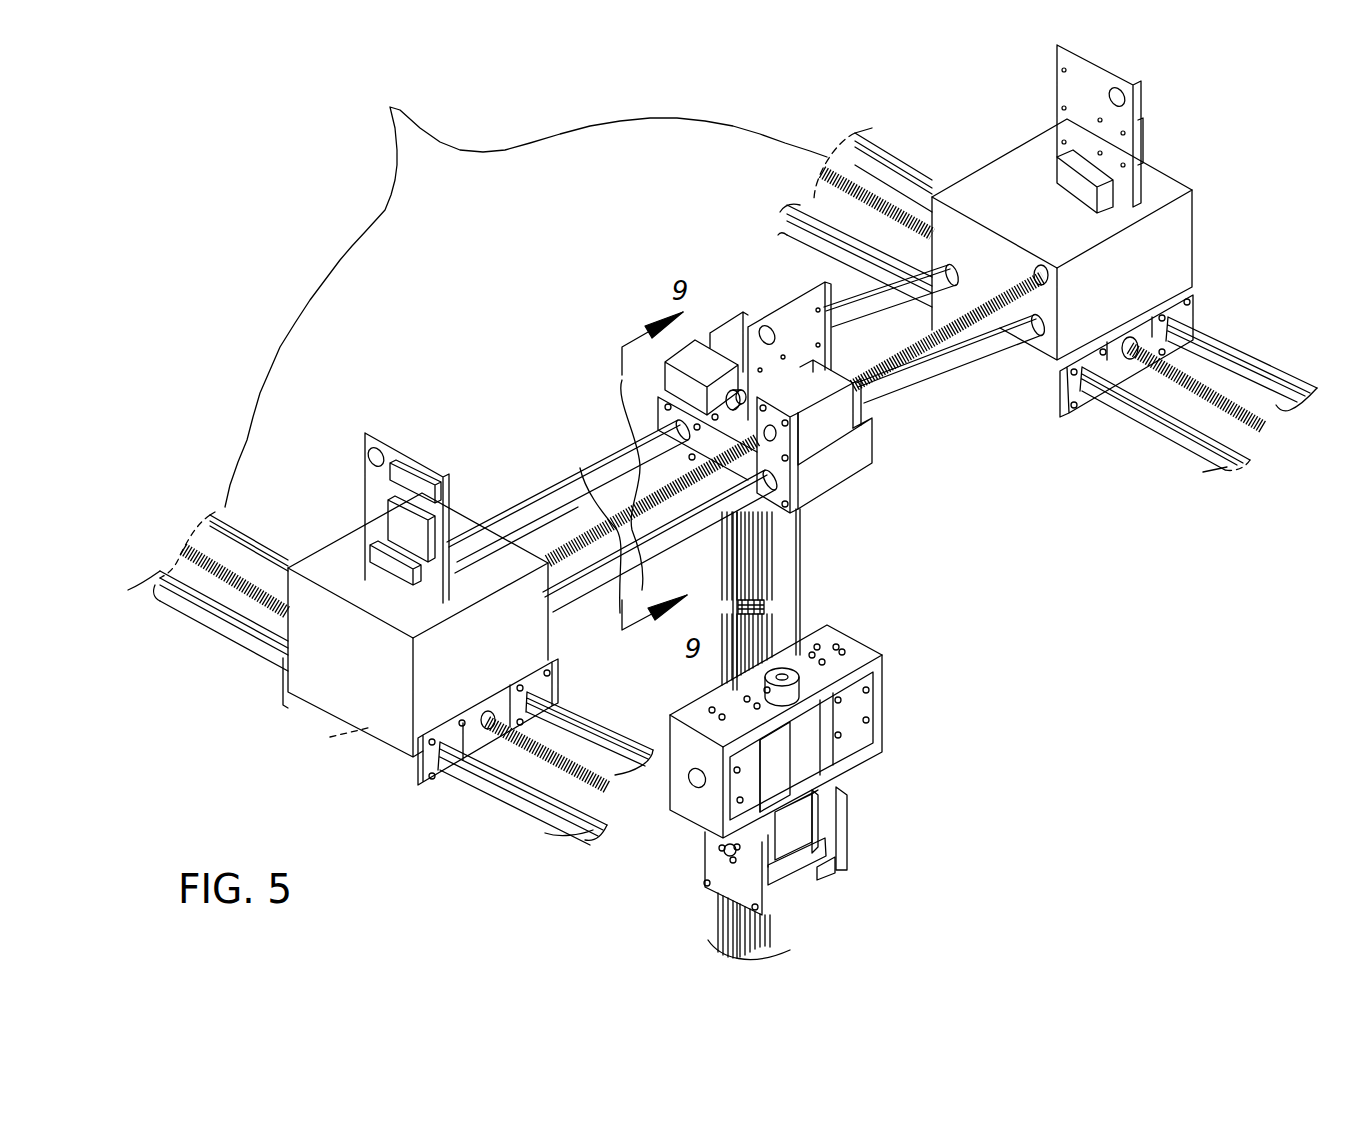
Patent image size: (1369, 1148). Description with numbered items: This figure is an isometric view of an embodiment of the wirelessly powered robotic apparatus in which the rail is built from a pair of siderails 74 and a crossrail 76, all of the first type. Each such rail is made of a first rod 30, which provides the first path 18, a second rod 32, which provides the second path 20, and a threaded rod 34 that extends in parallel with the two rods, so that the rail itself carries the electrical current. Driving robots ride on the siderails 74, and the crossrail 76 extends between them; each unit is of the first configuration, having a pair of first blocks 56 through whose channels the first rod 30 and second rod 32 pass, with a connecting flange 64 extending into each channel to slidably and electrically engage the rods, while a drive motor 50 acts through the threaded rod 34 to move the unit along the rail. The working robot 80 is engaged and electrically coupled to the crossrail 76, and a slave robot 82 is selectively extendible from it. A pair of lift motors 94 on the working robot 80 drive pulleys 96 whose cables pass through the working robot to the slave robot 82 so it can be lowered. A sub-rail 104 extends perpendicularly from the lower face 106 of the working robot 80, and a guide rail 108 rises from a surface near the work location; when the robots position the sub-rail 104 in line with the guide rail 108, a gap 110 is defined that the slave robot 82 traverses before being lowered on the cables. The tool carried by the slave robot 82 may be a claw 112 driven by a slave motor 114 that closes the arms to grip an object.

The first path 18 is at (1202, 440).
The second path 20 is at (1217, 330).
The first rod 30 is at (547, 525).
The second rod 32 is at (173, 607).
The threaded rod 34 is at (577, 520).
The drive motor 50 is at (473, 753).
The first block 56 is at (805, 400).
The connecting flange 64 is at (340, 698).
The siderail 74 is at (526, 289).
The crossrail 76 is at (1030, 358).
The working robot 80 is at (855, 458).
The slave robot 82 is at (878, 683).
The lift motor 94 is at (735, 323).
The pulley 96 is at (725, 400).
The sub-rail 104 is at (758, 553).
The lower face 106 is at (826, 500).
The guide rail 108 is at (762, 933).
The gap 110 is at (770, 603).
The claw 112 is at (843, 830).
The slave motor 114 is at (793, 838).